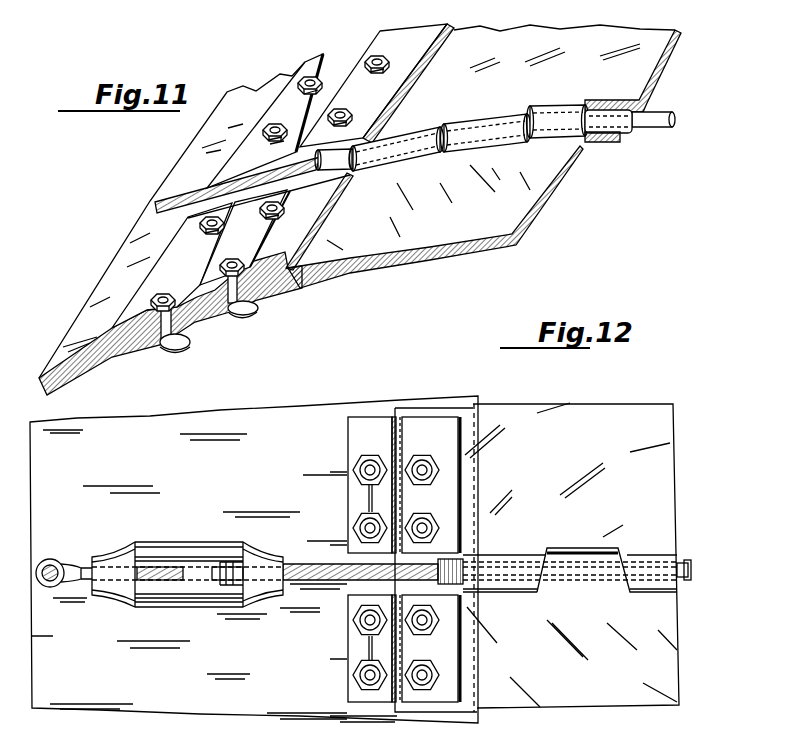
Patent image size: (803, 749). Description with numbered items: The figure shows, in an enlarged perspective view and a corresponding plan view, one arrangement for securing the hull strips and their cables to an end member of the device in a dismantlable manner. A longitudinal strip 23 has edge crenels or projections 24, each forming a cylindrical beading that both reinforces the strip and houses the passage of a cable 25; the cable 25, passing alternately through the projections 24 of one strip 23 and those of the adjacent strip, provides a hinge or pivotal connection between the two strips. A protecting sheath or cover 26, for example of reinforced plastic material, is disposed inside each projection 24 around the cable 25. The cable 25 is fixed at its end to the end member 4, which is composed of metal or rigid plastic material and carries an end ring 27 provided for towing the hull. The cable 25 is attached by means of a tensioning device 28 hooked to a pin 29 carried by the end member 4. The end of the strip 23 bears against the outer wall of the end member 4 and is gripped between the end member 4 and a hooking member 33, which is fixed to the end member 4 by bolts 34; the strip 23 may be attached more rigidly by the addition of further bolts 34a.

In FIG. 11, the end member 4 is at (97, 367).
In FIG. 11, the longitudinal strip 23 is at (532, 38).
In FIG. 12, the longitudinal strip 23 is at (503, 416).
In FIG. 11, the crenel or projection 24 is at (418, 133).
In FIG. 12, the crenel or projection 24 is at (578, 550).
In FIG. 11, the cable 25 is at (187, 197).
In FIG. 12, the cable 25 is at (578, 581).
In FIG. 11, the protecting sheath 26 is at (608, 136).
In FIG. 12, the protecting sheath 26 is at (452, 586).
In FIG. 12, the end ring 27 is at (58, 589).
In FIG. 12, the tensioning device 28 is at (197, 546).
In FIG. 12, the pin 29 is at (52, 565).
In FIG. 11, the hooking member 33 is at (195, 290).
In FIG. 11, the bolt 34 is at (318, 92).
In FIG. 12, the bolt 34 is at (370, 461).
In FIG. 11, the bolt 34a is at (376, 74).
In FIG. 12, the bolt 34a is at (422, 460).